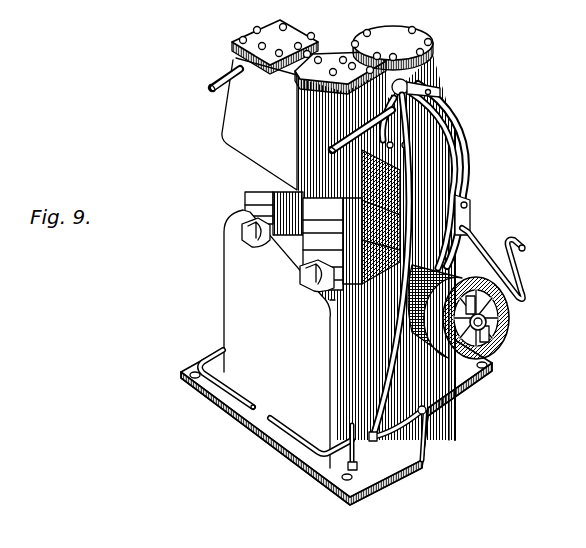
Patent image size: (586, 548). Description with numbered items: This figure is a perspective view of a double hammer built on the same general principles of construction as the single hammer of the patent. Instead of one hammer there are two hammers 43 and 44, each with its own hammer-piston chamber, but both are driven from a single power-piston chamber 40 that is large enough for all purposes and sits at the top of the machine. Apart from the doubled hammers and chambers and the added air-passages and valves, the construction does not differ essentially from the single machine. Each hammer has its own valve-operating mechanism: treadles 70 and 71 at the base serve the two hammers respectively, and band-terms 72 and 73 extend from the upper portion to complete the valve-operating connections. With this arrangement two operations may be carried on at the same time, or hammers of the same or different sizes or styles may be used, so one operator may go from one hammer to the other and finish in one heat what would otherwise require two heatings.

The power-piston chamber 40 is at (430, 73).
The hammer 43 is at (250, 196).
The hammer 44 is at (318, 238).
The treadle 70 is at (272, 447).
The treadle 71 is at (207, 360).
The band-term 72 is at (333, 147).
The band-term 73 is at (250, 63).